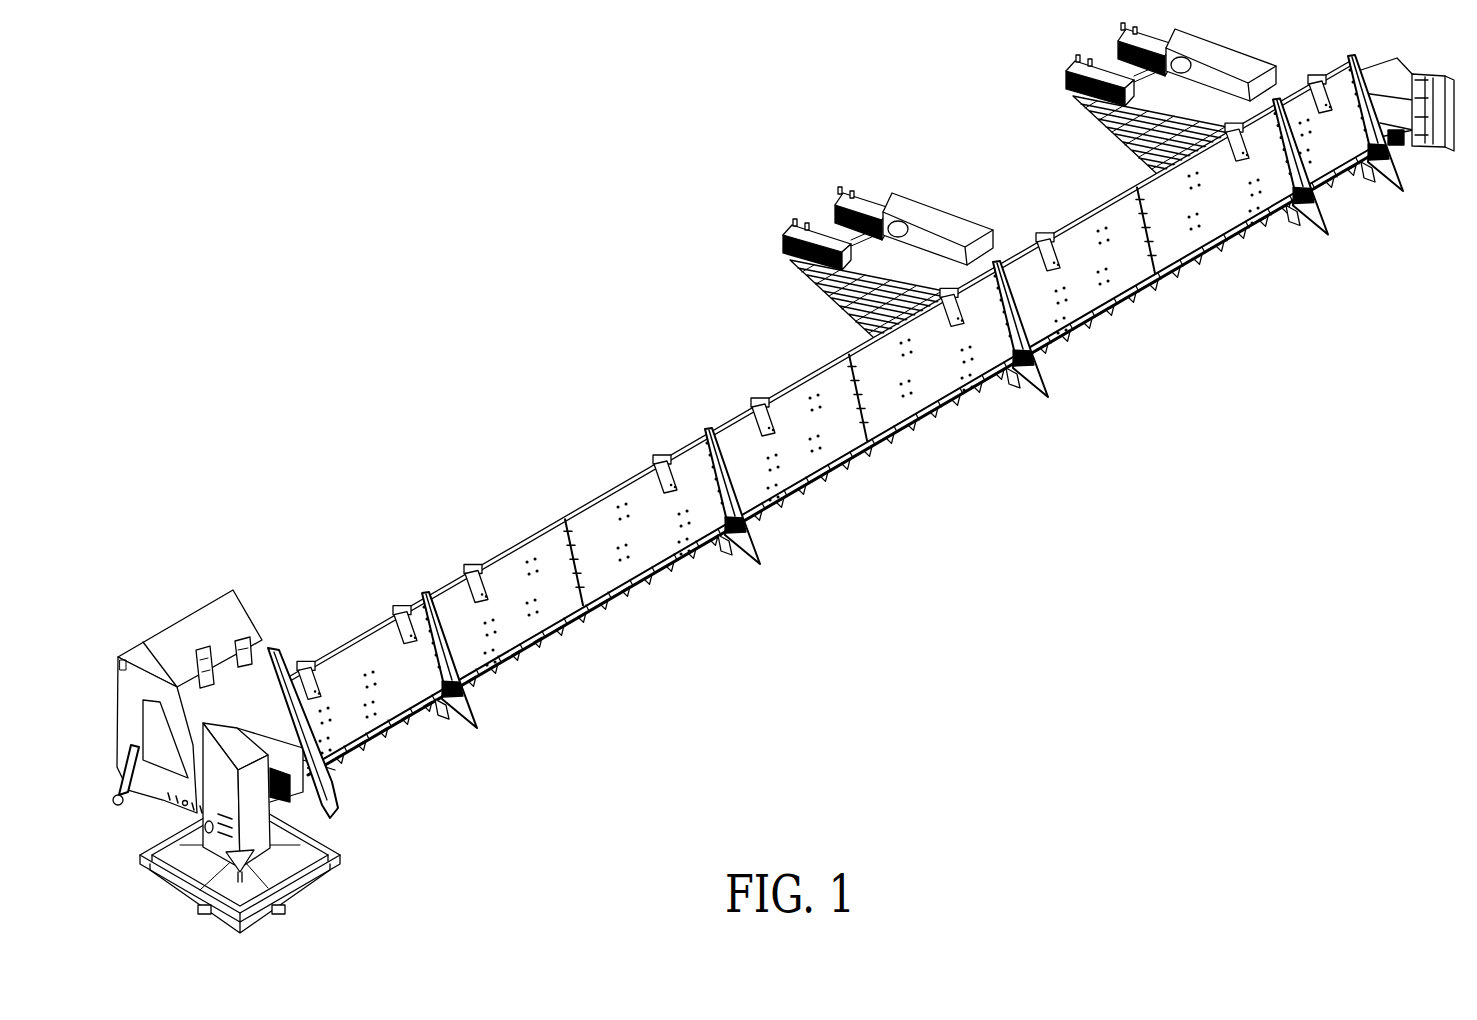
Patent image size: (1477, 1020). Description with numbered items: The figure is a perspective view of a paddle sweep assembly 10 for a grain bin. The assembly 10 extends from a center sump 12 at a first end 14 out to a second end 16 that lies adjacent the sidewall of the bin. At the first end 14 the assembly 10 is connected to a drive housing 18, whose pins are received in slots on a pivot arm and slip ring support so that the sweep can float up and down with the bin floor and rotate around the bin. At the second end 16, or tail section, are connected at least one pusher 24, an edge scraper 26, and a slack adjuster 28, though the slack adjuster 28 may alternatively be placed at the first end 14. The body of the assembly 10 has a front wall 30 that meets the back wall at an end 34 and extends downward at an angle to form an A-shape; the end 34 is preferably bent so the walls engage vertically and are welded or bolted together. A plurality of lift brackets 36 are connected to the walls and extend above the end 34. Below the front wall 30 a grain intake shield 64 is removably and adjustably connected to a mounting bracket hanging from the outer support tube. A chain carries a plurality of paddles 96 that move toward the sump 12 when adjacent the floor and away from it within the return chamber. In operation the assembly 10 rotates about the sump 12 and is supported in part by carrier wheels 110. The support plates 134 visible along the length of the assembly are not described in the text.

The paddle sweep assembly 10 is at (729, 165).
The center sump 12 is at (288, 866).
The first end 14 is at (829, 417).
The second end 16 is at (1402, 105).
The drive housing 18 is at (214, 622).
The pusher 24 is at (937, 199).
The edge scraper 26 is at (1437, 88).
The slack adjuster 28 is at (1404, 144).
The front wall 30 is at (1127, 263).
The end 34 is at (547, 527).
The lift brackets 36 is at (660, 455).
The grain intake shield 64 is at (688, 557).
The paddles 96 is at (877, 448).
The carrier wheels 110 is at (447, 716).
The support plate 134 is at (1047, 381).